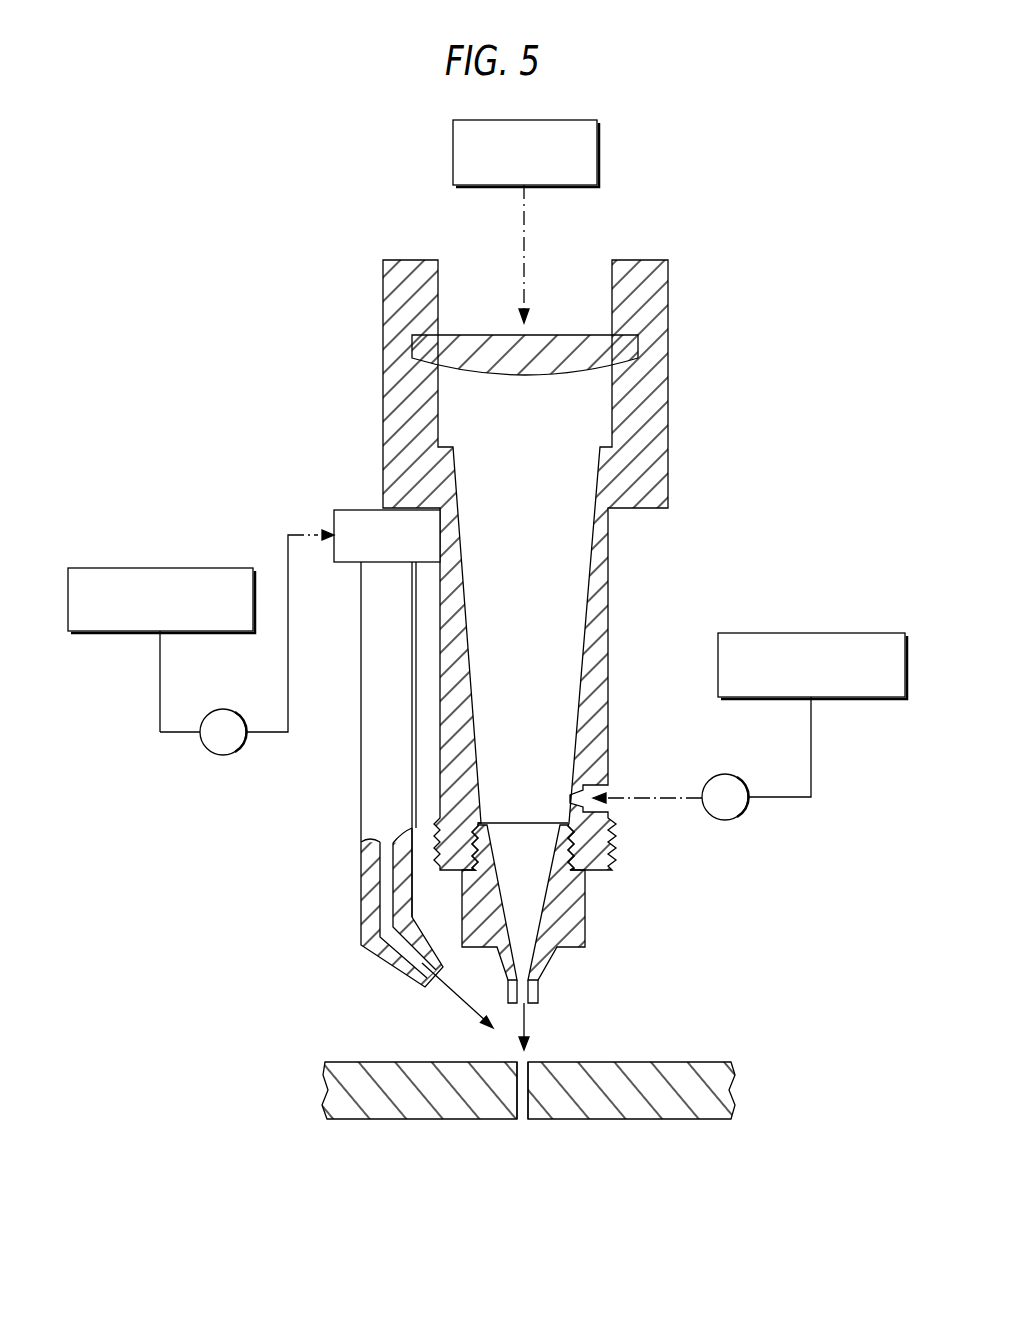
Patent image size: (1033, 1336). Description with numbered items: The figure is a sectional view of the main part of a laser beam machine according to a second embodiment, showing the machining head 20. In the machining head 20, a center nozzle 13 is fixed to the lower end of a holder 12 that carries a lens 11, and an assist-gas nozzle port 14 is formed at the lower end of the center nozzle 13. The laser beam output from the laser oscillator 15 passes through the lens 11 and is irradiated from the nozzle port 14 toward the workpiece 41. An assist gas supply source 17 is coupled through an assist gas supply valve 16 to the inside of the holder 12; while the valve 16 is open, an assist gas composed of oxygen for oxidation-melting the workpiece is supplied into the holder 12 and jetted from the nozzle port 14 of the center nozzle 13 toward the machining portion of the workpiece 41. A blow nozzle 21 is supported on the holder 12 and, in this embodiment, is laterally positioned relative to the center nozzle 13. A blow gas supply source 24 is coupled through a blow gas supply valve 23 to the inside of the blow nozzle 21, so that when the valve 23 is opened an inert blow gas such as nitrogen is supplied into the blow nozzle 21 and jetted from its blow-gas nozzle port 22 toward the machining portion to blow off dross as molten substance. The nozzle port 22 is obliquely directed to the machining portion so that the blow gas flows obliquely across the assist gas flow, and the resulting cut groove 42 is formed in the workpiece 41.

The lens 11 is at (638, 345).
The holder 12 is at (668, 447).
The center nozzle 13 is at (585, 904).
The assist-gas nozzle port 14 is at (538, 991).
The laser oscillator 15 is at (597, 148).
The assist gas supply valve 16 is at (725, 774).
The assist gas supply source 17 is at (811, 633).
The machining head 20 is at (539, 638).
The blow nozzle 21 is at (361, 889).
The blow-gas nozzle port 22 is at (420, 973).
The blow gas supply valve 23 is at (222, 709).
The blow gas supply source 24 is at (160, 568).
The workpiece 41 is at (733, 1079).
The cut groove (kerf) 42 is at (521, 1100).